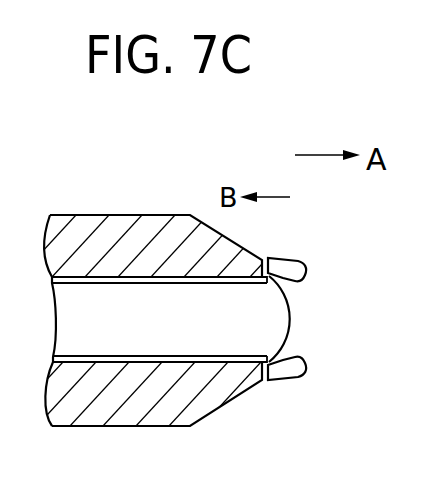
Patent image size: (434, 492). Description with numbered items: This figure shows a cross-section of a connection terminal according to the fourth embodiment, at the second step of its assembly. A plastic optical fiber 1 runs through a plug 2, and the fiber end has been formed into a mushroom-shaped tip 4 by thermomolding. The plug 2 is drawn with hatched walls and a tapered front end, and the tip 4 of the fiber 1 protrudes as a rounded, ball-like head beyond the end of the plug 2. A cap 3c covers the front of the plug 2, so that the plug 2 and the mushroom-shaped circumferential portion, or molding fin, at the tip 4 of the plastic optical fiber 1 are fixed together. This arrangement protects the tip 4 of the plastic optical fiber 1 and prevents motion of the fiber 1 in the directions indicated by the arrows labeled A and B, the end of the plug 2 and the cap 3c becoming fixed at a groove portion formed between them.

The plastic optical fiber 1 is at (95, 307).
The plug 2 is at (177, 248).
The cap 3c is at (290, 268).
The mushroom-shaped tip 4 is at (292, 317).